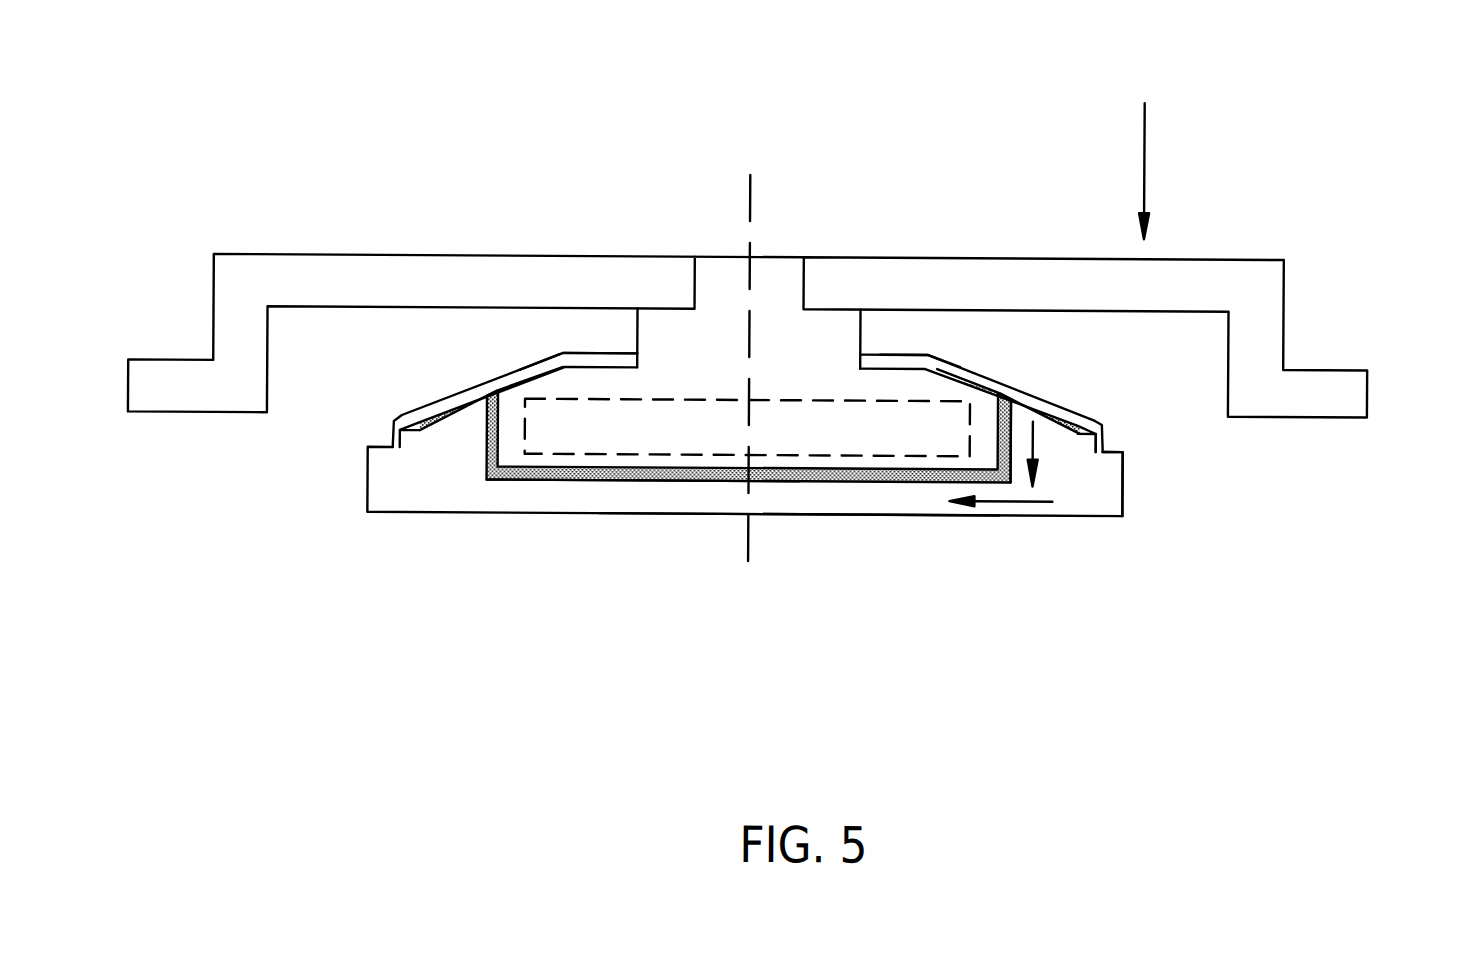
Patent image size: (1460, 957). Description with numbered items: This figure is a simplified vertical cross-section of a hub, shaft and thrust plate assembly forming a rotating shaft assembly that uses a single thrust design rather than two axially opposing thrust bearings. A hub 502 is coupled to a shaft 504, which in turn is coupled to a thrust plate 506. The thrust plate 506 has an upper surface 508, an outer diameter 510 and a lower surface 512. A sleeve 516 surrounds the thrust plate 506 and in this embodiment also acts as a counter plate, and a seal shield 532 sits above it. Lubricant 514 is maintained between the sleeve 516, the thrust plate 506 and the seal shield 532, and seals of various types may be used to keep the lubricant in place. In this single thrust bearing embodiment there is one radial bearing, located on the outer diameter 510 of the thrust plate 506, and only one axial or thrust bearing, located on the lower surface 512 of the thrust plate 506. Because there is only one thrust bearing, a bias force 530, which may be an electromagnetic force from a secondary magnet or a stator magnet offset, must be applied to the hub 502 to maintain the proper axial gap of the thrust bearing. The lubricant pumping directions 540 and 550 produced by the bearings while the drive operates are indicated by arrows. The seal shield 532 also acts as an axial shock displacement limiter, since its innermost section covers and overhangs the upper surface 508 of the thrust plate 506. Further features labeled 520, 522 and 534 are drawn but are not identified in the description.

The hub 502 is at (1263, 318).
The shaft 504 is at (772, 283).
The thrust plate 506 is at (927, 424).
The upper surface 508 is at (587, 354).
The outer diameter 510 is at (483, 442).
The lower surface 512 is at (545, 482).
The lubricant 514 is at (647, 481).
The sleeve 516 is at (782, 503).
The diaphragm 520 is at (418, 416).
The liner cup 522 is at (917, 480).
The bias force 530 is at (1143, 188).
The seal shield 532 is at (1250, 512).
The clamping region 534 is at (538, 363).
The lubricant pumping direction 540 is at (1037, 440).
The lubricant pumping direction 550 is at (1010, 501).